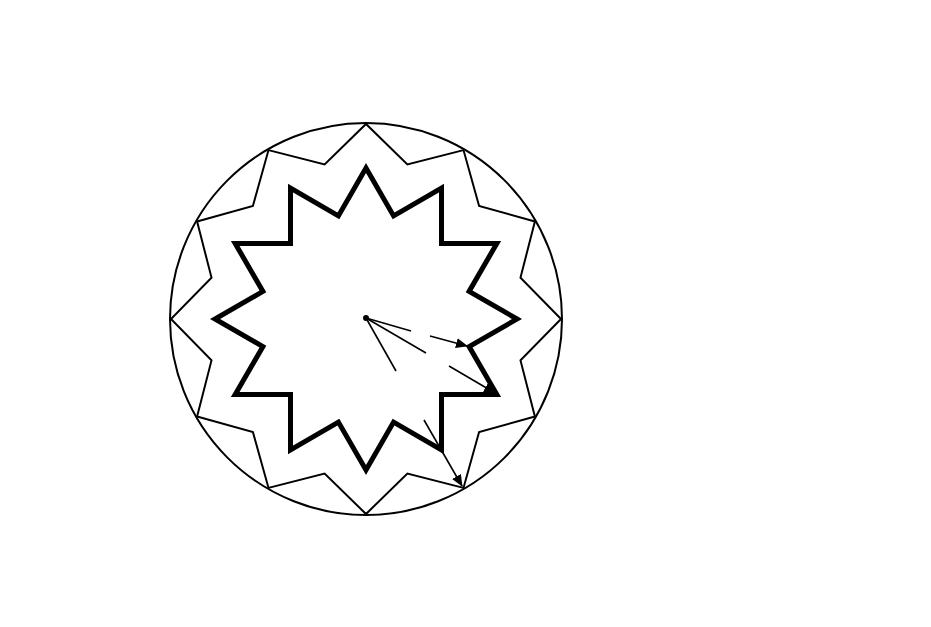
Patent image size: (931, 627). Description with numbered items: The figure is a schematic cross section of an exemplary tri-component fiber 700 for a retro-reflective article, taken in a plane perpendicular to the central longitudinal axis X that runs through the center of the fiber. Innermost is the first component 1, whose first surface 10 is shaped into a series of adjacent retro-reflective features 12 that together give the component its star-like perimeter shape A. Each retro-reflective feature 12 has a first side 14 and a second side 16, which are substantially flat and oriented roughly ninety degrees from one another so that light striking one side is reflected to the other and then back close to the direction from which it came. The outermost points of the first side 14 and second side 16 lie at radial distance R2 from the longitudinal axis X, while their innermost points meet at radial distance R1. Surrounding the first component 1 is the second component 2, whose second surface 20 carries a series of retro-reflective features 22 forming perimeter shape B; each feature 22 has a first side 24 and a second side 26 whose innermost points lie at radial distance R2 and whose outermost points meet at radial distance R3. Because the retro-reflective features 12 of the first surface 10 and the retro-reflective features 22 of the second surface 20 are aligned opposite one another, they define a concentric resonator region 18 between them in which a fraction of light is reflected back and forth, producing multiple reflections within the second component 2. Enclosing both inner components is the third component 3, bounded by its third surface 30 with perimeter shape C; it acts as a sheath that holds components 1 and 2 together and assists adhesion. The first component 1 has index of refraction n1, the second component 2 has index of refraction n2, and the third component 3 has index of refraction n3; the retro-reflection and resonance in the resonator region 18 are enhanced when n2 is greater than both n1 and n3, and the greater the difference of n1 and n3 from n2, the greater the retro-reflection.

The tri-component fiber 700 is at (162, 82).
The first component 1 is at (265, 250).
The first surface 10 is at (240, 240).
The retro-reflective feature 12 is at (433, 227).
The first side 14 is at (442, 223).
The second side 16 is at (459, 241).
The concentric resonator region 18 is at (532, 323).
The perimeter shape A is at (247, 399).
The second component 2 is at (208, 292).
The second surface 20 is at (185, 303).
The retro-reflective feature 22 is at (428, 152).
The first side 24 is at (447, 159).
The second side 26 is at (463, 174).
The perimeter shape B is at (257, 461).
The third component 3 is at (178, 343).
The third surface 30 is at (182, 395).
The perimeter shape C is at (276, 501).
The first index of refraction n1 is at (276, 267).
The second index of refraction n2 is at (234, 267).
The third index of refraction n3 is at (186, 362).
The longitudinal axis X is at (370, 355).
The radial distance R1 is at (416, 333).
The radial distance R2 is at (430, 355).
The radial distance R3 is at (414, 402).